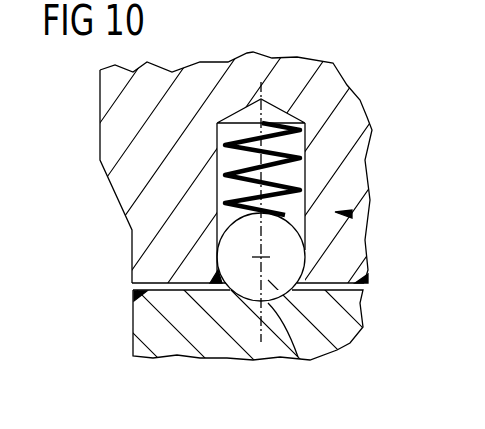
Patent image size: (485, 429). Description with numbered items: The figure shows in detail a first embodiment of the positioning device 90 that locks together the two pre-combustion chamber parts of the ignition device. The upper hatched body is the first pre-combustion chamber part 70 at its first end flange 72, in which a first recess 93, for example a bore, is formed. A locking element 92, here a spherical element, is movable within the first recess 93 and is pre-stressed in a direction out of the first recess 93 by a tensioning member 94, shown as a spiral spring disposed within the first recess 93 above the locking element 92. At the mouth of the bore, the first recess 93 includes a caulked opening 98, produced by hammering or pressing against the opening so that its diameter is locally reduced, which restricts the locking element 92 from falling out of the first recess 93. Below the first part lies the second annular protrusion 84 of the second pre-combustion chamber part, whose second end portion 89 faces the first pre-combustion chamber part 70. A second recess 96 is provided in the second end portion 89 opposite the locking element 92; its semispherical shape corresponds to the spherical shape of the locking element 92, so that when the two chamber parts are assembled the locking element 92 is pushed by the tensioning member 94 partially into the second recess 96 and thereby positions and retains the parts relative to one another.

The first pre-combustion chamber part 70 is at (105, 127).
The first end flange 72 is at (133, 290).
The second annular protrusion 84 is at (142, 328).
The second end portion 89 is at (343, 293).
The positioning device 90 is at (348, 214).
The locking element 92 is at (253, 302).
The first recess 93 is at (305, 173).
The tensioning member 94 is at (305, 140).
The second recess 96 is at (298, 357).
The caulked opening 98 is at (215, 277).